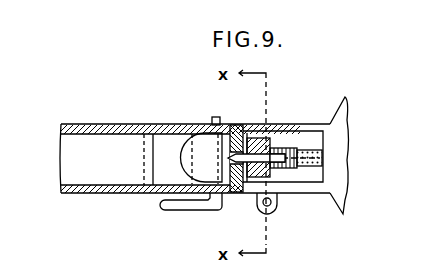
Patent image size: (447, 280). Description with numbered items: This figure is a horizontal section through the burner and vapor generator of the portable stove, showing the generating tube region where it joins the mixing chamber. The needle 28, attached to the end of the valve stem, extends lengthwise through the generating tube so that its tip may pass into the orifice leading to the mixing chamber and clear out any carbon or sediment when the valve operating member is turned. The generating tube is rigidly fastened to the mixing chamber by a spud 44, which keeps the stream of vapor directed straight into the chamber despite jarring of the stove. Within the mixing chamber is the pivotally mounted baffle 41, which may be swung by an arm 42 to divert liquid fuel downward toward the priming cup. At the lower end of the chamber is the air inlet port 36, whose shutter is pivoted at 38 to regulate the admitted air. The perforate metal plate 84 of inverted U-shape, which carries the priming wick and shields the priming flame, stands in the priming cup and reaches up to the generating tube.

The needle 28 is at (268, 155).
The air inlet port 36 is at (168, 167).
The pivot 38 is at (277, 208).
The baffle 41 is at (204, 137).
The arm 42 is at (172, 212).
The spud 44 is at (258, 148).
The perforate metal plate 84 is at (323, 158).